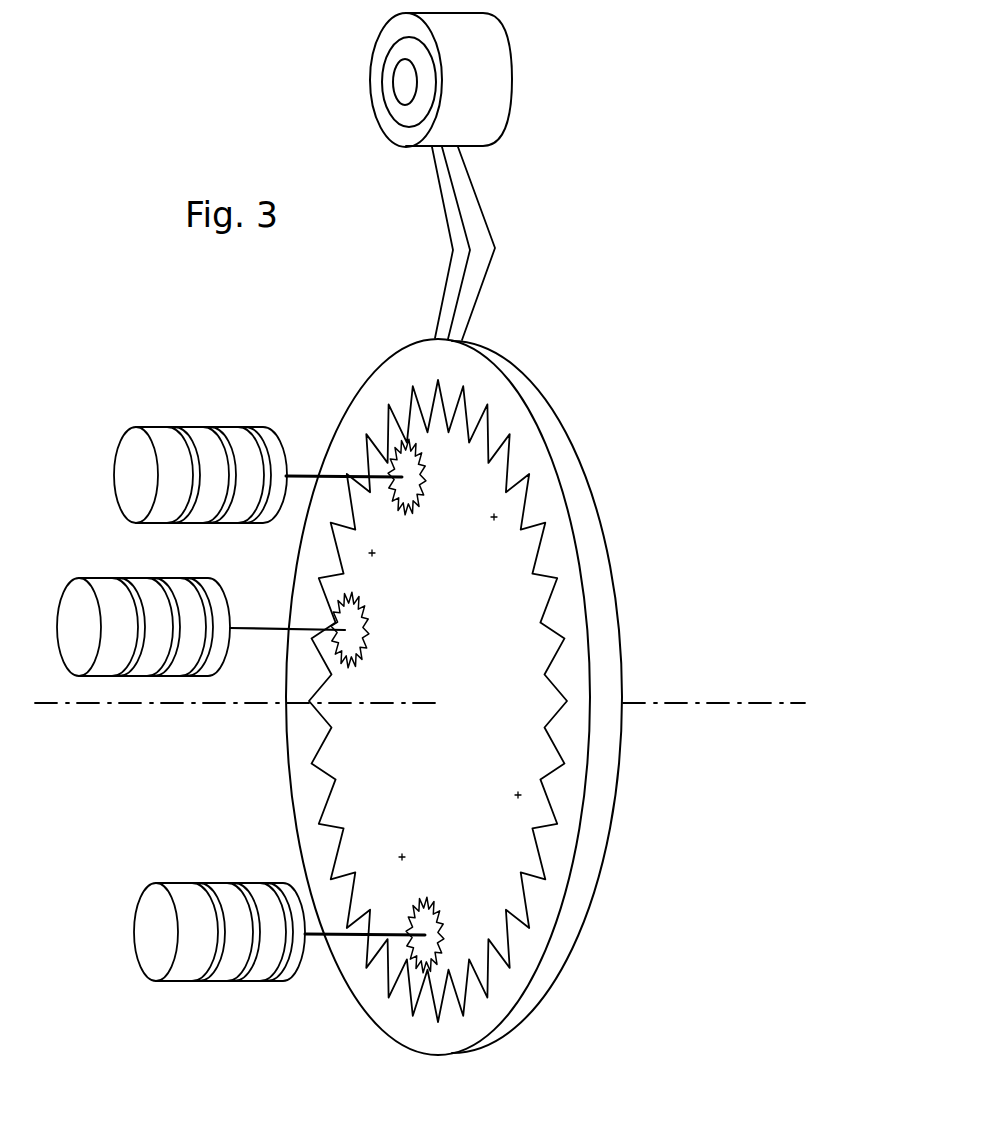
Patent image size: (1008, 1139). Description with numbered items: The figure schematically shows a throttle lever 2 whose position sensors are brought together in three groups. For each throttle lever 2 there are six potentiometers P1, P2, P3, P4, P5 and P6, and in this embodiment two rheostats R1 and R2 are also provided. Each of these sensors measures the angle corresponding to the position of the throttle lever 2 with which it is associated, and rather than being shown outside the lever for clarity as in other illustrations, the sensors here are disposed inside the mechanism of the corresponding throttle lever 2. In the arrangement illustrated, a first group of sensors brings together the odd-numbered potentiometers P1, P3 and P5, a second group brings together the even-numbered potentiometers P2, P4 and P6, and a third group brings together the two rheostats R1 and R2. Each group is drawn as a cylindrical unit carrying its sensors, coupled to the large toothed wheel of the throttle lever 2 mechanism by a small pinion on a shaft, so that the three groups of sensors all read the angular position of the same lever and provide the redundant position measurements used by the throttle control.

The throttle lever 2 is at (473, 217).
The potentiometer P1 is at (172, 427).
The potentiometer P2 is at (200, 883).
The potentiometer P3 is at (207, 427).
The potentiometer P4 is at (240, 981).
The potentiometer P5 is at (248, 427).
The potentiometer P6 is at (262, 883).
The rheostat R1 is at (118, 578).
The rheostat R2 is at (155, 578).